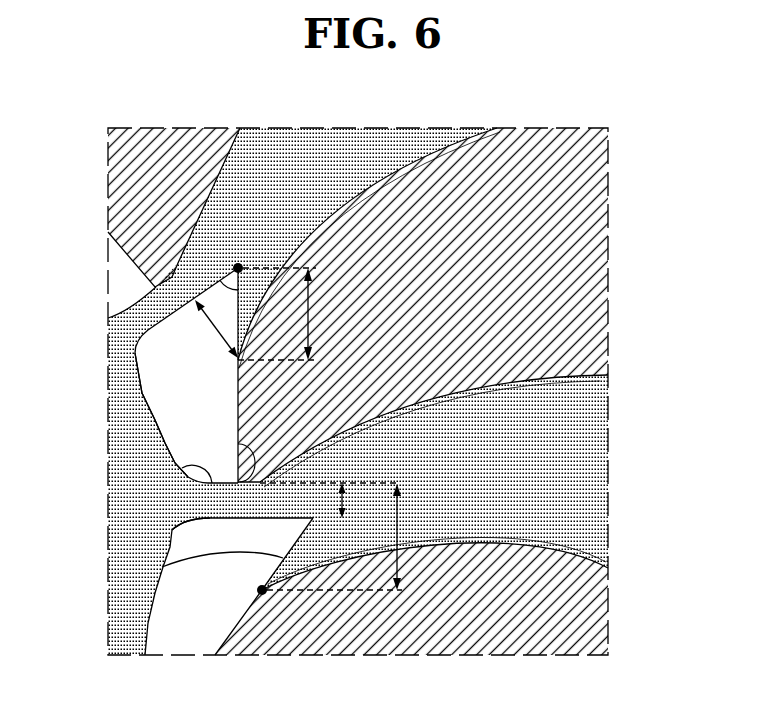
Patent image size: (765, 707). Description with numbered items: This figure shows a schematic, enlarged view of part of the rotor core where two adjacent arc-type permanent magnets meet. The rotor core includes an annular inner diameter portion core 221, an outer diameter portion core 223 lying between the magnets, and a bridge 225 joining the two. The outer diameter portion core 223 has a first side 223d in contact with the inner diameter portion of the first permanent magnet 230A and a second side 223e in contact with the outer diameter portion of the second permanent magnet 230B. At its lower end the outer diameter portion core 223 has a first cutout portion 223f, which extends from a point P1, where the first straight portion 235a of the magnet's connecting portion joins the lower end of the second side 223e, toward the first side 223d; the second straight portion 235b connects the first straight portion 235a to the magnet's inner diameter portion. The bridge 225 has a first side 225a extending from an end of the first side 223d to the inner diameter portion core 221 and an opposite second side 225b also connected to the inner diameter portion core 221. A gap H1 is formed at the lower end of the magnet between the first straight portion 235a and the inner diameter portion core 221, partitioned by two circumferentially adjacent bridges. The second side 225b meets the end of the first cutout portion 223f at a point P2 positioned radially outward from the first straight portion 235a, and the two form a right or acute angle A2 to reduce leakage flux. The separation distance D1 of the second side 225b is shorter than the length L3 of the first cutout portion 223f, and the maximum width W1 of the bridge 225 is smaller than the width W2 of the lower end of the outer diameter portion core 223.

The first permanent magnet 230A is at (600, 258).
The second permanent magnet 230B is at (598, 616).
The outer diameter portion core 223 is at (600, 462).
The first side 223d is at (568, 380).
The second side 223e is at (573, 541).
The first cutout portion 223f is at (162, 567).
The bridge 225 is at (205, 500).
The first side 225a is at (182, 468).
The second side 225b is at (172, 530).
The first straight portion 235a is at (240, 400).
The second straight portion 235b is at (236, 446).
The inner diameter portion core 221 is at (123, 622).
The gap H1 is at (178, 375).
The point P1 is at (247, 591).
The point P2 is at (239, 257).
The acute angle A2 is at (225, 297).
The separation distance D1 is at (214, 329).
The length L3 is at (288, 314).
The maximum width W1 is at (359, 500).
The width W2 is at (349, 537).